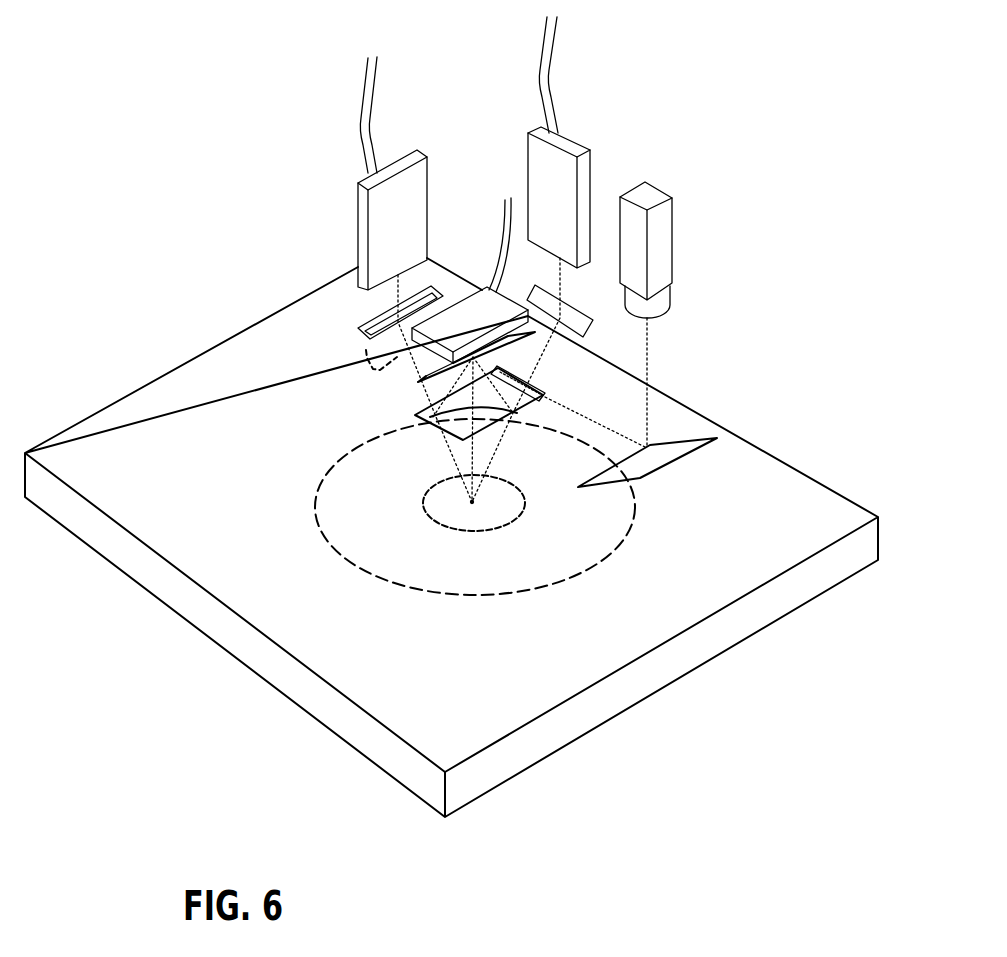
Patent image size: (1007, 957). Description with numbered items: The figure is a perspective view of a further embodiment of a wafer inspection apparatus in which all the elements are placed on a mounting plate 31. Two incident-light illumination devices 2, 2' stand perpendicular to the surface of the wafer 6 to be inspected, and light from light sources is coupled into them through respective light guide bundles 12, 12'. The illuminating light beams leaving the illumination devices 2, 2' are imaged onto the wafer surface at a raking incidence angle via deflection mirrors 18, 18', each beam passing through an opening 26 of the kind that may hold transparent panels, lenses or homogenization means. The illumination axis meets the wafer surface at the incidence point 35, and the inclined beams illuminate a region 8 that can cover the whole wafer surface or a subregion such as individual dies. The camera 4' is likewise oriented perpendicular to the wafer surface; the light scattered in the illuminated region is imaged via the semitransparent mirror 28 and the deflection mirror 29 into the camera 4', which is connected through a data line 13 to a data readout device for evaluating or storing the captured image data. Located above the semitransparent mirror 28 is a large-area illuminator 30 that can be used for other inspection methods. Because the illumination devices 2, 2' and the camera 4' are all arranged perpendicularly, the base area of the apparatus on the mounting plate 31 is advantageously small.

The incident-light illumination device 2 is at (363, 220).
The incident-light illumination device 2' is at (531, 197).
The camera 4' is at (675, 250).
The wafer 6 is at (590, 567).
The region 8 is at (423, 505).
The light guide bundle 12 is at (334, 115).
The light guide bundle 12' is at (514, 75).
The data line 13 is at (505, 209).
The deflection mirror 18 is at (347, 362).
The deflection mirror 18' is at (583, 327).
The opening 26 is at (370, 320).
The semitransparent mirror 28 is at (418, 383).
The deflection mirror 29 is at (663, 460).
The large-area illuminator 30 is at (465, 303).
The mounting plate 31 is at (688, 617).
The incidence point 35 is at (488, 514).